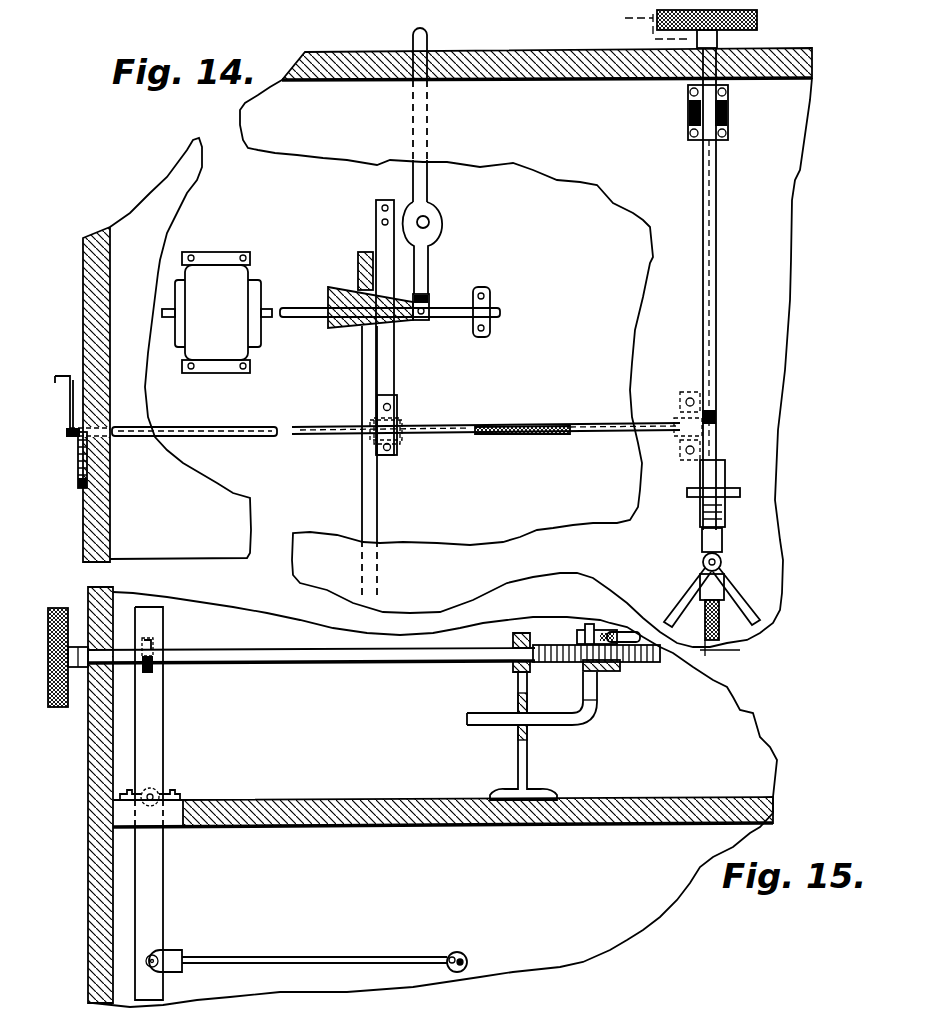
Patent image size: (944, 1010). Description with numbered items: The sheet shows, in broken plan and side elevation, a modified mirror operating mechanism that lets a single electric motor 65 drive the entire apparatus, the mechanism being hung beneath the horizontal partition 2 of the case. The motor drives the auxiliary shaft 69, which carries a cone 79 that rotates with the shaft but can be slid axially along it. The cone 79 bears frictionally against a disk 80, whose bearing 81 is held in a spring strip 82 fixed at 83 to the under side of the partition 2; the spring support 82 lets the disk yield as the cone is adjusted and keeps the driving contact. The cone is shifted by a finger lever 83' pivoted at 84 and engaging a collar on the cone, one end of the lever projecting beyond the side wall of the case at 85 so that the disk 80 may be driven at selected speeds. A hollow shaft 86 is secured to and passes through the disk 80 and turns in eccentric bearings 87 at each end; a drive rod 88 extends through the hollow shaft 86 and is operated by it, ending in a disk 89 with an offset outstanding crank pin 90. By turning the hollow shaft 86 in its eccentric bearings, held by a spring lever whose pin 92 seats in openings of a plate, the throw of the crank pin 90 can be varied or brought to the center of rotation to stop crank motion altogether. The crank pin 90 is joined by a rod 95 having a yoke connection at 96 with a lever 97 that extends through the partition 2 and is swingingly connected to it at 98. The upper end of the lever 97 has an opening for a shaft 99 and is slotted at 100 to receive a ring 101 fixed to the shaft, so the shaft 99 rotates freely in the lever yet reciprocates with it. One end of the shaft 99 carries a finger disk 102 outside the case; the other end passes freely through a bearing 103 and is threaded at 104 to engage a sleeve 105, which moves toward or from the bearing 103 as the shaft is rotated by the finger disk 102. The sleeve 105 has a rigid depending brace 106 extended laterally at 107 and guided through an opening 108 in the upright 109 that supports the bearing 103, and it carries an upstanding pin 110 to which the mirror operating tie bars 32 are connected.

In FIG. 14, the partition 2 is at (526, 362).
In FIG. 15, the partition 2 is at (302, 800).
In FIG. 15, the tie bars 32 is at (628, 635).
In FIG. 14, the electric motor 65 is at (217, 312).
In FIG. 14, the auxiliary shaft 69 is at (390, 300).
In FIG. 14, the cone 79 is at (347, 311).
In FIG. 14, the disk 80 is at (360, 373).
In FIG. 14, the bearing 81 is at (397, 405).
In FIG. 14, the spring strip 82 is at (392, 368).
In FIG. 14, the fixing point 83 is at (359, 220).
In FIG. 14, the finger lever 83' is at (443, 244).
In FIG. 14, the pivot 84 is at (431, 222).
In FIG. 14, the projecting lever end 85 is at (440, 113).
In FIG. 14, the hollow shaft 86 is at (452, 430).
In FIG. 14, the eccentric bearings 87 is at (678, 415).
In FIG. 14, the drive rod 88 is at (503, 431).
In FIG. 15, the drive rod 88 is at (468, 955).
In FIG. 14, the disk 89 is at (712, 417).
In FIG. 15, the disk 89 is at (462, 955).
In FIG. 14, the crank pin 90 is at (62, 420).
In FIG. 15, the crank pin 90 is at (455, 957).
In FIG. 14, the pin 92 is at (70, 392).
In FIG. 15, the rod 95 is at (318, 957).
In FIG. 15, the yoke connection 96 is at (175, 953).
In FIG. 15, the lever 97 is at (157, 882).
In FIG. 15, the swinging connection 98 is at (167, 793).
In FIG. 15, the shaft 99 is at (307, 666).
In FIG. 15, the slot 100 is at (150, 675).
In FIG. 15, the ring 101 is at (150, 650).
In FIG. 15, the finger disk 102 is at (66, 672).
In FIG. 15, the bearing 103 is at (513, 665).
In FIG. 15, the threaded portion 104 is at (653, 662).
In FIG. 15, the sleeve 105 is at (595, 668).
In FIG. 15, the depending brace 106 is at (616, 715).
In FIG. 15, the lateral extension 107 is at (538, 728).
In FIG. 15, the opening 108 is at (519, 713).
In FIG. 15, the upright 109 is at (518, 752).
In FIG. 15, the upstanding pin 110 is at (588, 626).